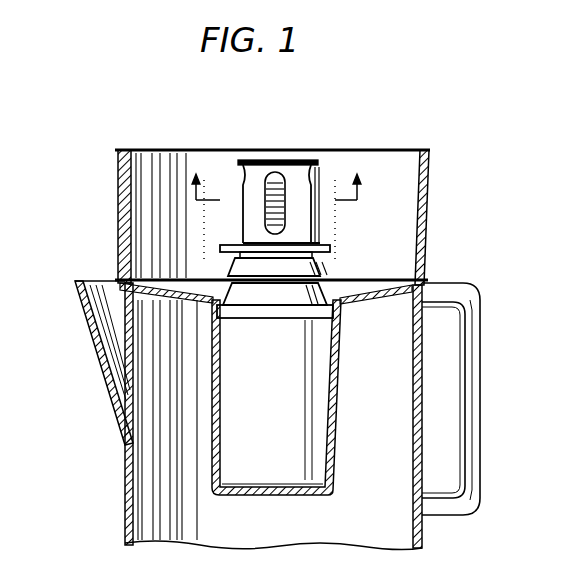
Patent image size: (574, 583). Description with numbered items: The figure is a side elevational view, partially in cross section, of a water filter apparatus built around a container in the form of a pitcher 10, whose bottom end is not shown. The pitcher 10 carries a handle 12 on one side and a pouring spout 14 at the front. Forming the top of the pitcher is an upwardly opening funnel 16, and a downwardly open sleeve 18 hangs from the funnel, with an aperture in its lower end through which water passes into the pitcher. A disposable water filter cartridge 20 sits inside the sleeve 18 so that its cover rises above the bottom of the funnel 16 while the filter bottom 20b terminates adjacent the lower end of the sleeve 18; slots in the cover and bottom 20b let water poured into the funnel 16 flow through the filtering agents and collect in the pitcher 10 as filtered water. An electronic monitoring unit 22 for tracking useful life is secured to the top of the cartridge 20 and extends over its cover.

The pitcher 10 is at (120, 498).
The handle 12 is at (478, 415).
The pouring spout 14 is at (105, 278).
The funnel 16 is at (428, 238).
The sleeve 18 is at (340, 425).
The filter cartridge 20 is at (268, 420).
The filter bottom 20b is at (268, 486).
The electronic monitoring unit 22 is at (311, 150).